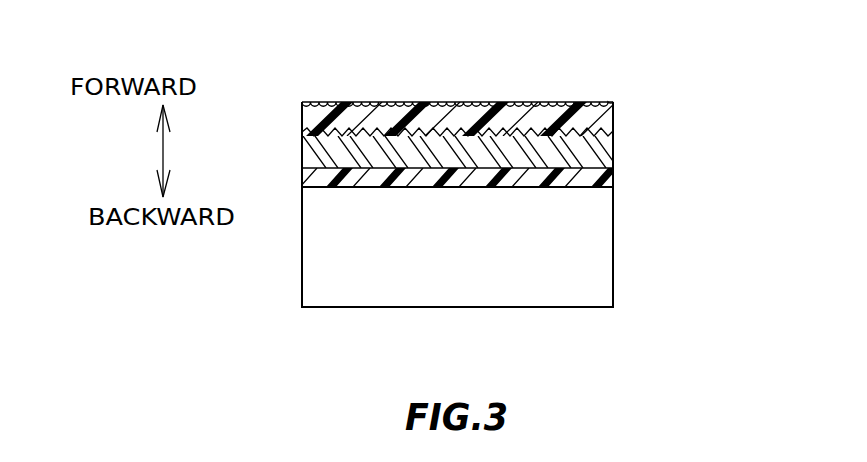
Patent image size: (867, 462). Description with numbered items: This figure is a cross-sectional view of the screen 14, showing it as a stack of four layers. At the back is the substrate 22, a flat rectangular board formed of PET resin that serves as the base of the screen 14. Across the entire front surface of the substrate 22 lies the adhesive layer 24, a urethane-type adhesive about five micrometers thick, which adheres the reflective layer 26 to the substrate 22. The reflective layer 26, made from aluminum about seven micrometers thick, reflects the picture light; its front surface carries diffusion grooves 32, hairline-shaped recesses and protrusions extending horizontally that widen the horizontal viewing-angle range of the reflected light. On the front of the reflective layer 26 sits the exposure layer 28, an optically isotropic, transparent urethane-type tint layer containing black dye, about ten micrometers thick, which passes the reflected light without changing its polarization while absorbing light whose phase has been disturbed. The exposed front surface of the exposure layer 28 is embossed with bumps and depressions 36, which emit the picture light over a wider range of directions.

The screen 14 is at (764, 78).
The substrate 22 is at (615, 235).
The adhesive layer 24 is at (615, 178).
The reflective layer 26 is at (615, 152).
The exposure layer 28 is at (615, 113).
The diffusion grooves 32 is at (298, 135).
The bumps and depressions 36 is at (298, 104).